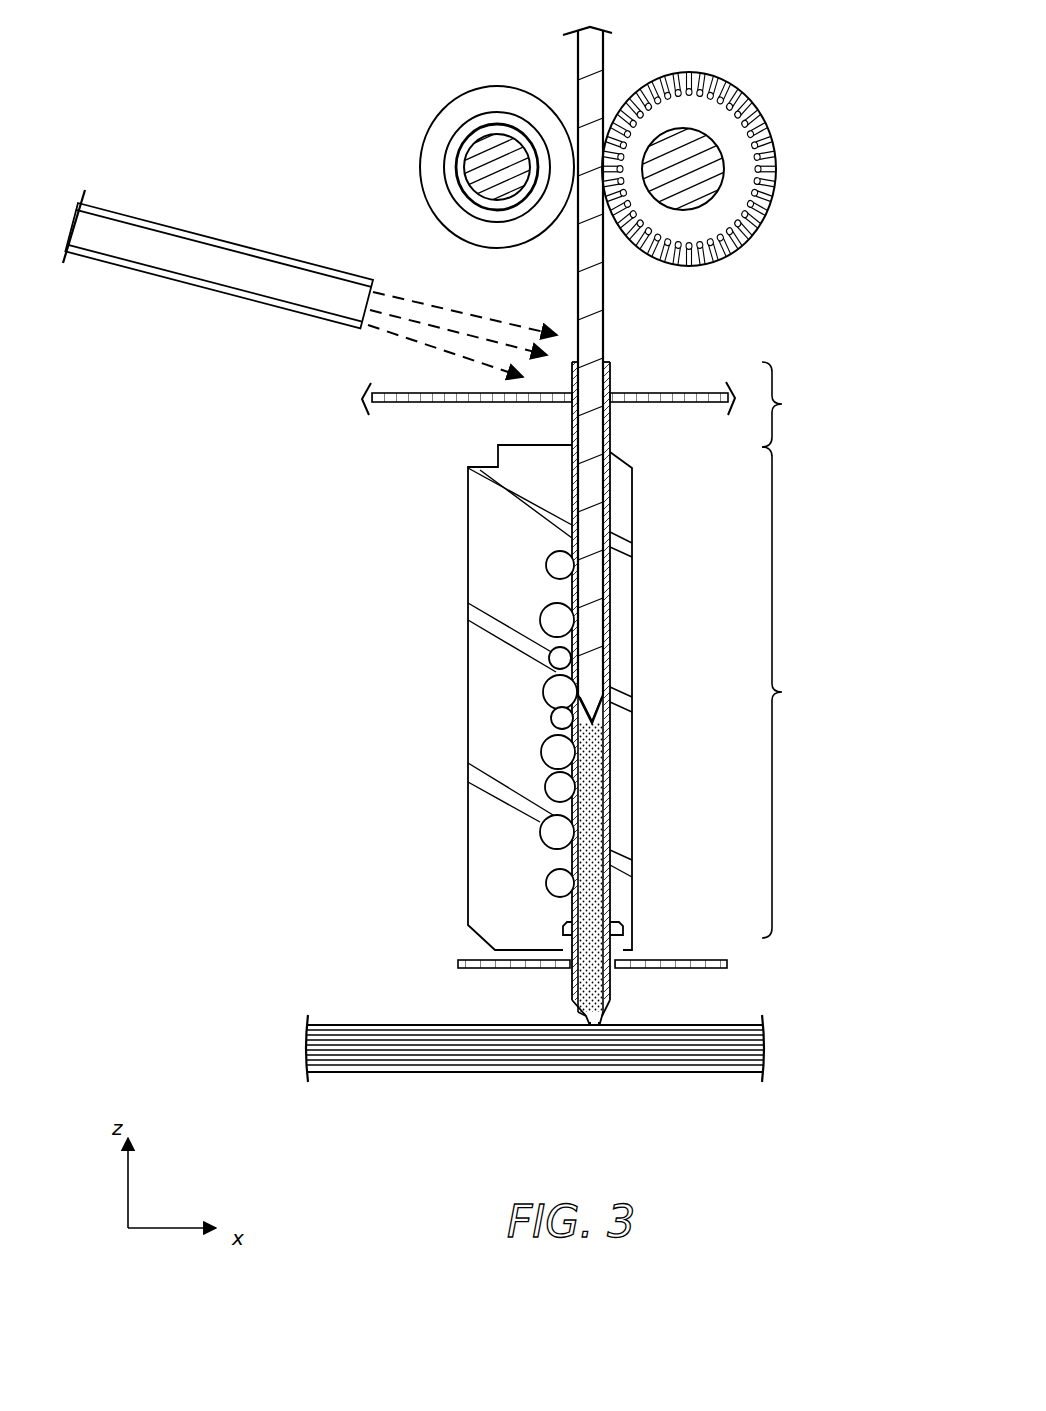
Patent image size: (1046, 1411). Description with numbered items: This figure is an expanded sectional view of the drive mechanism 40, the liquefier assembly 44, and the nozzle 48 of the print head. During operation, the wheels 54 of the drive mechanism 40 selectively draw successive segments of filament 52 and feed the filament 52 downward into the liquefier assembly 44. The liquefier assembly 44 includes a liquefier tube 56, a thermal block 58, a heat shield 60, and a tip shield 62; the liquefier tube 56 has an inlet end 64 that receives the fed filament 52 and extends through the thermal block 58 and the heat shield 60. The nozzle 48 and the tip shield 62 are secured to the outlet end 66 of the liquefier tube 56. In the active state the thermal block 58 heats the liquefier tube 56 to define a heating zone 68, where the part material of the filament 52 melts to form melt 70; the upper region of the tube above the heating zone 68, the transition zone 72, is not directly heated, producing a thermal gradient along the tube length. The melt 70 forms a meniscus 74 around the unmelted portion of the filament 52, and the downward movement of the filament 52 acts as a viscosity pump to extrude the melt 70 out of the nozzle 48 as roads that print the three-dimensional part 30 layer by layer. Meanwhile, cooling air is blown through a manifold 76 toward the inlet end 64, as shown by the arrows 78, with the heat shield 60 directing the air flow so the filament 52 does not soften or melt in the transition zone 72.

The 3D part 30 is at (745, 1022).
The drive mechanism 40 is at (390, 138).
The liquefier assembly 44 is at (368, 632).
The nozzle 48 is at (573, 1005).
The filament 52 is at (580, 88).
The wheels 54 is at (427, 187).
The liquefier tube 56 is at (607, 607).
The thermal block 58 is at (472, 722).
The heat shield 60 is at (394, 404).
The tip shield 62 is at (472, 958).
The inlet end 64 is at (613, 348).
The outlet end 66 is at (628, 987).
The heating zone 68 is at (789, 692).
The melt 70 is at (600, 803).
The transition zone 72 is at (788, 404).
The meniscus 74 is at (607, 715).
The manifold 76 is at (188, 228).
The arrows 78 is at (447, 352).